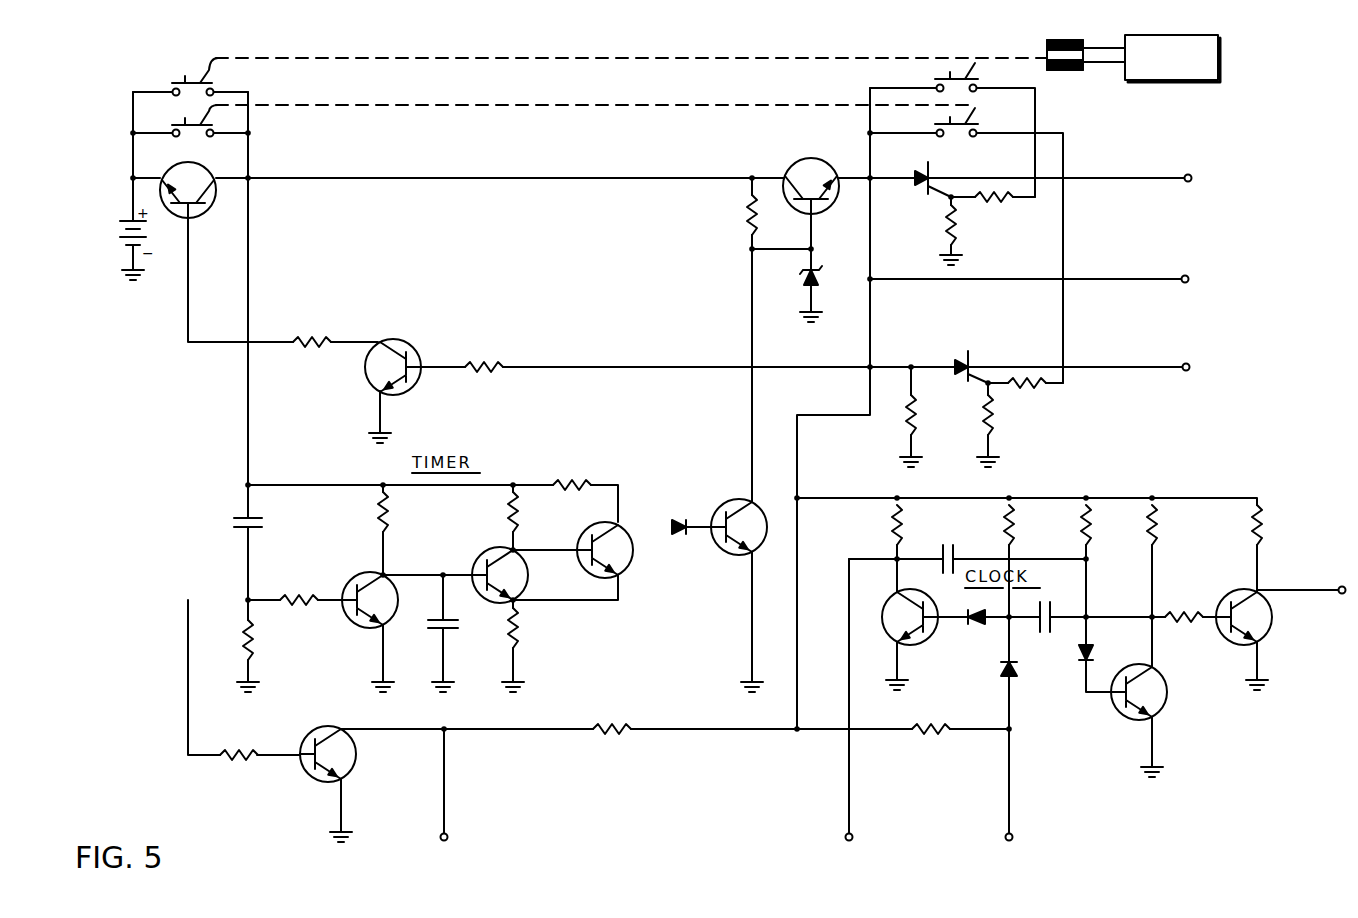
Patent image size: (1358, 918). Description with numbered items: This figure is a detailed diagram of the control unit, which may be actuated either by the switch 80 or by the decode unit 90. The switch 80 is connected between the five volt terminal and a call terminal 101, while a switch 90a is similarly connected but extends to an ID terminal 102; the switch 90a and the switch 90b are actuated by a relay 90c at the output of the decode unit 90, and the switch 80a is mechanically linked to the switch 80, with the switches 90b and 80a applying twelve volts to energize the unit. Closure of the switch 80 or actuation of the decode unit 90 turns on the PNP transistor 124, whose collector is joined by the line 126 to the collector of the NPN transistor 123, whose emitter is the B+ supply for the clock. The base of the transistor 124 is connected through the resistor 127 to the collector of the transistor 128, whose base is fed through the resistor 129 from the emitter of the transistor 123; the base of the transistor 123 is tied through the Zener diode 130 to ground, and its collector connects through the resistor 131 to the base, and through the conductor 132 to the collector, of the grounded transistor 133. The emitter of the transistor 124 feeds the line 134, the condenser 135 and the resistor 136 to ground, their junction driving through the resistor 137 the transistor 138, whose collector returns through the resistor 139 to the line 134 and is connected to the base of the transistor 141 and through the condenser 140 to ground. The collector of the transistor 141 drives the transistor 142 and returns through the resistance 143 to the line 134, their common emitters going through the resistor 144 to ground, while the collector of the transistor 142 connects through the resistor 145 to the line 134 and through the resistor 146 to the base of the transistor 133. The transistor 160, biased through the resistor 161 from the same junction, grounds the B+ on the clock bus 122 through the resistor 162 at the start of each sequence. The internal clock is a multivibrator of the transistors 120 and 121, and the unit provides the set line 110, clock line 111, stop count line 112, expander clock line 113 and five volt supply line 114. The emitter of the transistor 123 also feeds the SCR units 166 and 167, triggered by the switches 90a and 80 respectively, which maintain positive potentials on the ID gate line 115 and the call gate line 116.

The switch 90b is at (190, 73).
The switch 80a is at (184, 124).
The PNP transistor 124 is at (187, 172).
The line 126 is at (346, 177).
The resistor 127 is at (319, 339).
The transistor 128 is at (405, 345).
The resistor 129 is at (495, 365).
The resistor 131 is at (748, 218).
The NPN transistor 123 is at (812, 165).
The Zener diode 130 is at (806, 285).
The clock bus 122 is at (872, 326).
The SCR unit 166 is at (920, 168).
The ID terminal 102 is at (1027, 205).
The ID gate line 115 is at (1186, 174).
The 5 volt supply line 114 is at (1183, 276).
The call gate line 116 is at (1184, 363).
The SCR unit 167 is at (970, 356).
The call terminal 101 is at (1050, 385).
The switch 90a is at (941, 82).
The switch 80 is at (940, 124).
The relay 90c is at (1075, 72).
The decode unit 90 is at (1218, 80).
The line 134 is at (249, 443).
The condenser 135 is at (236, 516).
The resistor 139 is at (378, 512).
The resistor 137 is at (306, 596).
The resistor 136 is at (251, 648).
The transistor 138 is at (352, 623).
The resistor 161 is at (223, 755).
The transistor 160 is at (345, 769).
The resistor 145 is at (571, 482).
The resistance 143 is at (508, 509).
The transistor 141 is at (526, 578).
The transistor 142 is at (631, 562).
The resistor 144 is at (521, 630).
The condenser 140 is at (455, 633).
The resistor 146 is at (677, 520).
The conductor 132 is at (751, 456).
The transistor 133 is at (757, 510).
The resistor 162 is at (609, 725).
The set line 110 is at (448, 831).
The clock line 111 is at (853, 835).
The stop count line 112 is at (1013, 834).
The expander clock line 113 is at (1340, 586).
The transistor 120 is at (945, 645).
The transistor 121 is at (1088, 725).